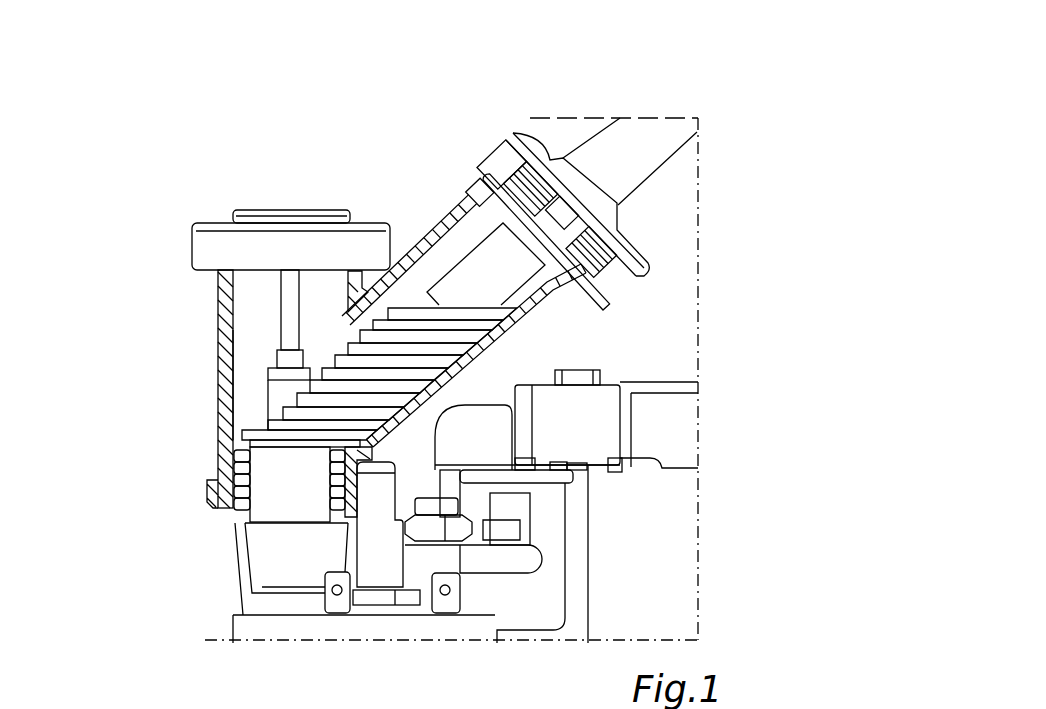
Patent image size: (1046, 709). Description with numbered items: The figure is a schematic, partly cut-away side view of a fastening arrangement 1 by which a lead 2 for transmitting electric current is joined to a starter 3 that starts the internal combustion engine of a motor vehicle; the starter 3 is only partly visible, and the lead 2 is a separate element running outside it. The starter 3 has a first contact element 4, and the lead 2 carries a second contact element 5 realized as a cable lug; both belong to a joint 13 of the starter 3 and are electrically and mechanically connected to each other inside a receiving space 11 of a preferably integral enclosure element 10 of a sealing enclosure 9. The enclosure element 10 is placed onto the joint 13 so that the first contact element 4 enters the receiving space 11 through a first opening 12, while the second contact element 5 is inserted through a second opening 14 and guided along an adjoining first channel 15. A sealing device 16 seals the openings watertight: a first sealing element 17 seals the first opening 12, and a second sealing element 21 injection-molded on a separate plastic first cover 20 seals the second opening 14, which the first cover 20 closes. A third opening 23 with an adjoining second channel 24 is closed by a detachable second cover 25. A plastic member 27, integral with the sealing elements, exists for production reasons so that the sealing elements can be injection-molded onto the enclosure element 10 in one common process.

The fastening arrangement 1 is at (672, 190).
The lead 2 is at (656, 121).
The starter 3 is at (684, 522).
The first contact element 4 is at (222, 478).
The second contact element 5 is at (284, 394).
The sealing enclosure 9 is at (226, 284).
The enclosure element 10 is at (245, 446).
The receiving space 11 is at (244, 392).
The first opening 12 is at (278, 448).
The joint 13 is at (293, 534).
The second opening 14 is at (477, 212).
The first channel 15 is at (478, 337).
The sealing device 16 is at (226, 522).
The first sealing element 17 is at (340, 613).
The first cover 20 is at (515, 132).
The second sealing element 21 is at (572, 159).
The third opening 23 is at (281, 277).
The second channel 24 is at (339, 282).
The second cover 25 is at (207, 243).
The plastic member 27 is at (298, 284).